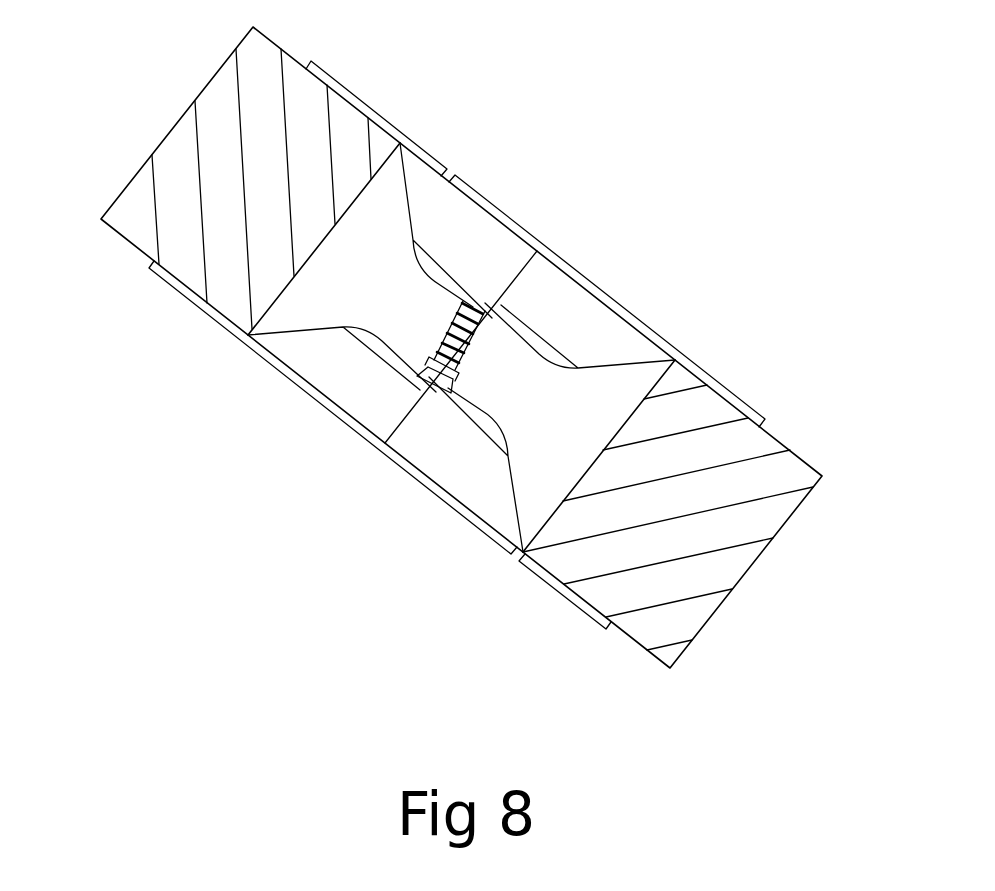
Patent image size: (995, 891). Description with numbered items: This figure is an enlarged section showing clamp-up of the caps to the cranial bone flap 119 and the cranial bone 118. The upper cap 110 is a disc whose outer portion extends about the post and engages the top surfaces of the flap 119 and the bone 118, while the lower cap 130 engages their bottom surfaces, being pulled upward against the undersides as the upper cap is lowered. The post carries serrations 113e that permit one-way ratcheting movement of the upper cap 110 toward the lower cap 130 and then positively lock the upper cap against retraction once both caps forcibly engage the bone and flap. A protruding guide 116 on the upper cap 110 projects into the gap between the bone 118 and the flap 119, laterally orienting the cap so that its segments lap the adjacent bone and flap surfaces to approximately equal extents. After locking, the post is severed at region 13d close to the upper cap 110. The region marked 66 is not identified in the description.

The upper cap 110 is at (725, 382).
The cranial bone flap 119 is at (312, 213).
The cranial bone 118 is at (690, 545).
The protruding guide 116 is at (637, 393).
The severing region of post 13d is at (555, 228).
The lower cap 130 is at (510, 562).
The central cavity / neck region 66 is at (342, 518).
The serrations of post 113e is at (450, 335).